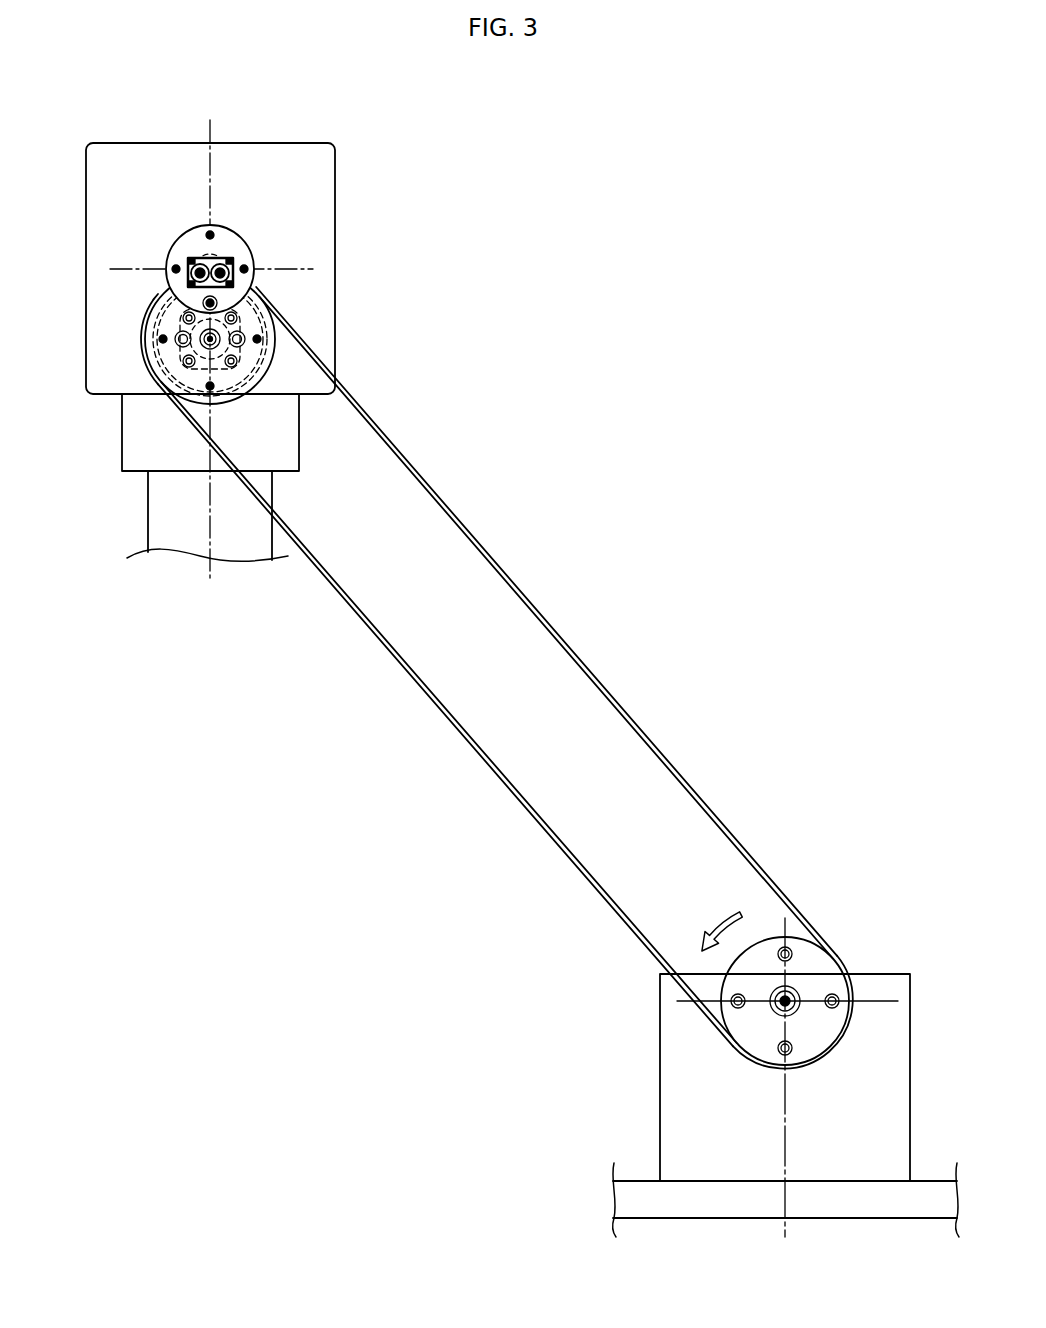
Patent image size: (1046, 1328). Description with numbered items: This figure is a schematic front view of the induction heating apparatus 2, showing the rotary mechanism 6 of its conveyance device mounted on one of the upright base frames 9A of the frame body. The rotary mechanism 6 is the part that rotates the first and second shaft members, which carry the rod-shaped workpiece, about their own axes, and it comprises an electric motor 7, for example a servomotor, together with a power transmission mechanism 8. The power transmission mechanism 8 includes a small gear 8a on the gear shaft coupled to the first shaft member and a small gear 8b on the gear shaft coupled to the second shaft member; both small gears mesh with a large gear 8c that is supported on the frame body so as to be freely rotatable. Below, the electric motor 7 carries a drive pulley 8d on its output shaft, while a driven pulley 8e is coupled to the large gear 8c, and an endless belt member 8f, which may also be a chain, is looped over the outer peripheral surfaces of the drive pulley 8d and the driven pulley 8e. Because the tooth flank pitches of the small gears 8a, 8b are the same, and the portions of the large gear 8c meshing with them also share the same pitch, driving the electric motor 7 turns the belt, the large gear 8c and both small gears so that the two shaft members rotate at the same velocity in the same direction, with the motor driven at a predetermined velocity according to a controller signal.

The induction heating apparatus 2 is at (766, 243).
The rotary mechanism 6 is at (579, 245).
The electric motor 7 is at (684, 1070).
The power transmission mechanism 8 is at (439, 383).
The small gear 8a is at (222, 258).
The small gear 8b is at (195, 256).
The large gear 8c is at (258, 355).
The drive pulley 8d is at (818, 966).
The driven pulley 8e is at (142, 347).
The endless belt member 8f is at (485, 551).
The base frame 9A is at (338, 185).